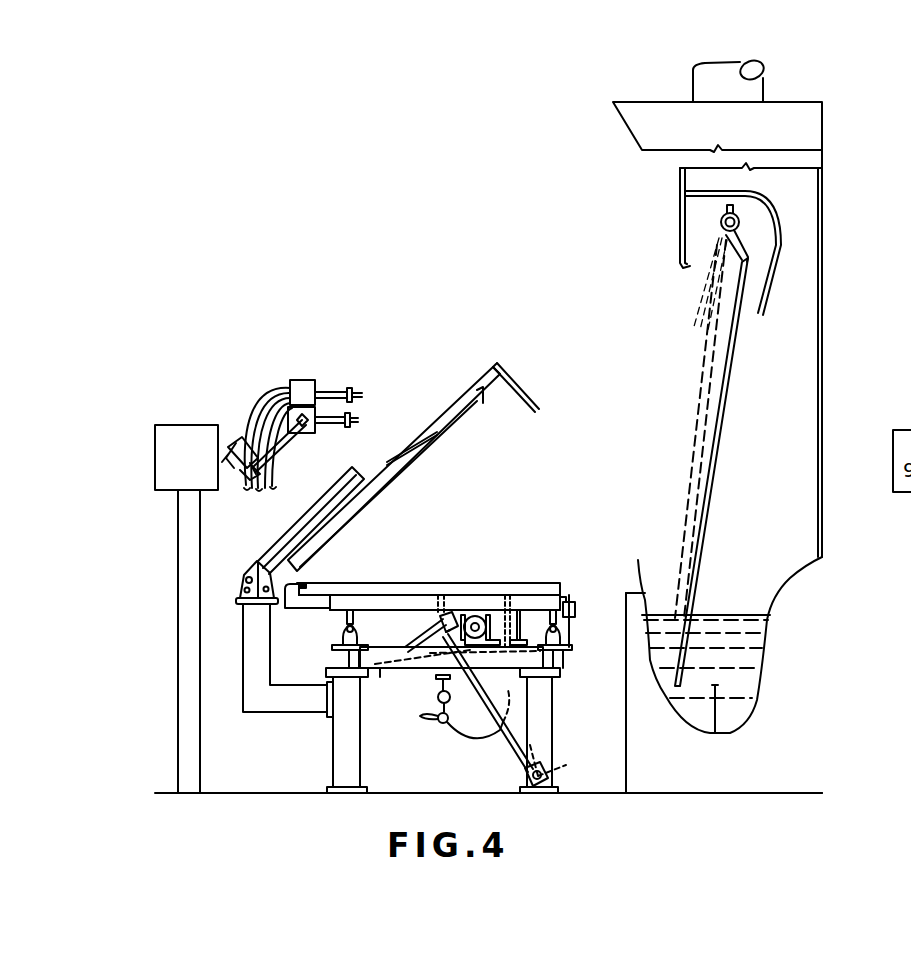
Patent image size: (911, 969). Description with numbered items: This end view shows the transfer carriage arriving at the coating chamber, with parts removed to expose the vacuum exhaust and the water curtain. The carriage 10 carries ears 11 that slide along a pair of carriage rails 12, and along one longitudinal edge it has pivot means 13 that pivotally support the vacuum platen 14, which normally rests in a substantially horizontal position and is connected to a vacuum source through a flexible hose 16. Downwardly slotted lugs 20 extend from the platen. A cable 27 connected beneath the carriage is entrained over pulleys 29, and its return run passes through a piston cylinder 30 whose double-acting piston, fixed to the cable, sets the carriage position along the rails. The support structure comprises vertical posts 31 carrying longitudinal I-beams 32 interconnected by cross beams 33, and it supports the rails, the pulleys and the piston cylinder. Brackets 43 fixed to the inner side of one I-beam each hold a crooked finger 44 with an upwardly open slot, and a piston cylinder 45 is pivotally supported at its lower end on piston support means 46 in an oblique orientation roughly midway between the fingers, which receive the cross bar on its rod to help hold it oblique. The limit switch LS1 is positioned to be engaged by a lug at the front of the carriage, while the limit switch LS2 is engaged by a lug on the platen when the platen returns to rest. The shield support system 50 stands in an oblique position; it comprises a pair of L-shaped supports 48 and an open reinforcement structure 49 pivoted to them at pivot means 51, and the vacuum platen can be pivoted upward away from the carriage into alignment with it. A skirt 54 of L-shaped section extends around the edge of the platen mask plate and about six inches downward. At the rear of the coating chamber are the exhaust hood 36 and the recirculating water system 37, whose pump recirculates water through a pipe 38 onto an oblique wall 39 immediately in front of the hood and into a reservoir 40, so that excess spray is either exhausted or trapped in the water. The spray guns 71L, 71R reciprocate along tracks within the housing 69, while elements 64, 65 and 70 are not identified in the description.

The carriage 10 is at (374, 583).
The ears 11 is at (345, 618).
The carriage rails 12 is at (343, 634).
The pivot means 13 is at (287, 607).
The vacuum platen 14 is at (405, 583).
The flexible hose 16 is at (475, 742).
The downwardly slotted lugs 20 is at (460, 593).
The cable 27 is at (478, 614).
The pulleys 29 is at (490, 600).
The piston cylinder 30 is at (451, 658).
The vertical posts 31 is at (333, 768).
The longitudinal I-beams 32 is at (340, 655).
The cross beams 33 is at (378, 678).
The exhaust hood 36 is at (822, 133).
The recirculating water system 37 is at (706, 330).
The pipe 38 is at (718, 226).
The oblique wall 39 is at (735, 360).
The reservoir 40 is at (642, 592).
The brackets 43 is at (392, 670).
The crooked finger 44 is at (432, 629).
The piston cylinder 45 is at (518, 748).
The piston support means 46 is at (548, 773).
The L-shaped supports 48 is at (243, 695).
The open reinforcement structure 49 is at (283, 542).
The shield support system 50 is at (378, 457).
The pivot means 51 is at (242, 577).
The skirt 54 is at (503, 377).
The valve 64 is at (240, 442).
The strut 65 is at (232, 458).
The housing 69 is at (199, 474).
The stand 70 is at (188, 418).
The spray gun 71R is at (329, 391).
The spray gun 71L is at (330, 434).
The limit switch LS1 is at (528, 592).
The limit switch LS2 is at (571, 597).